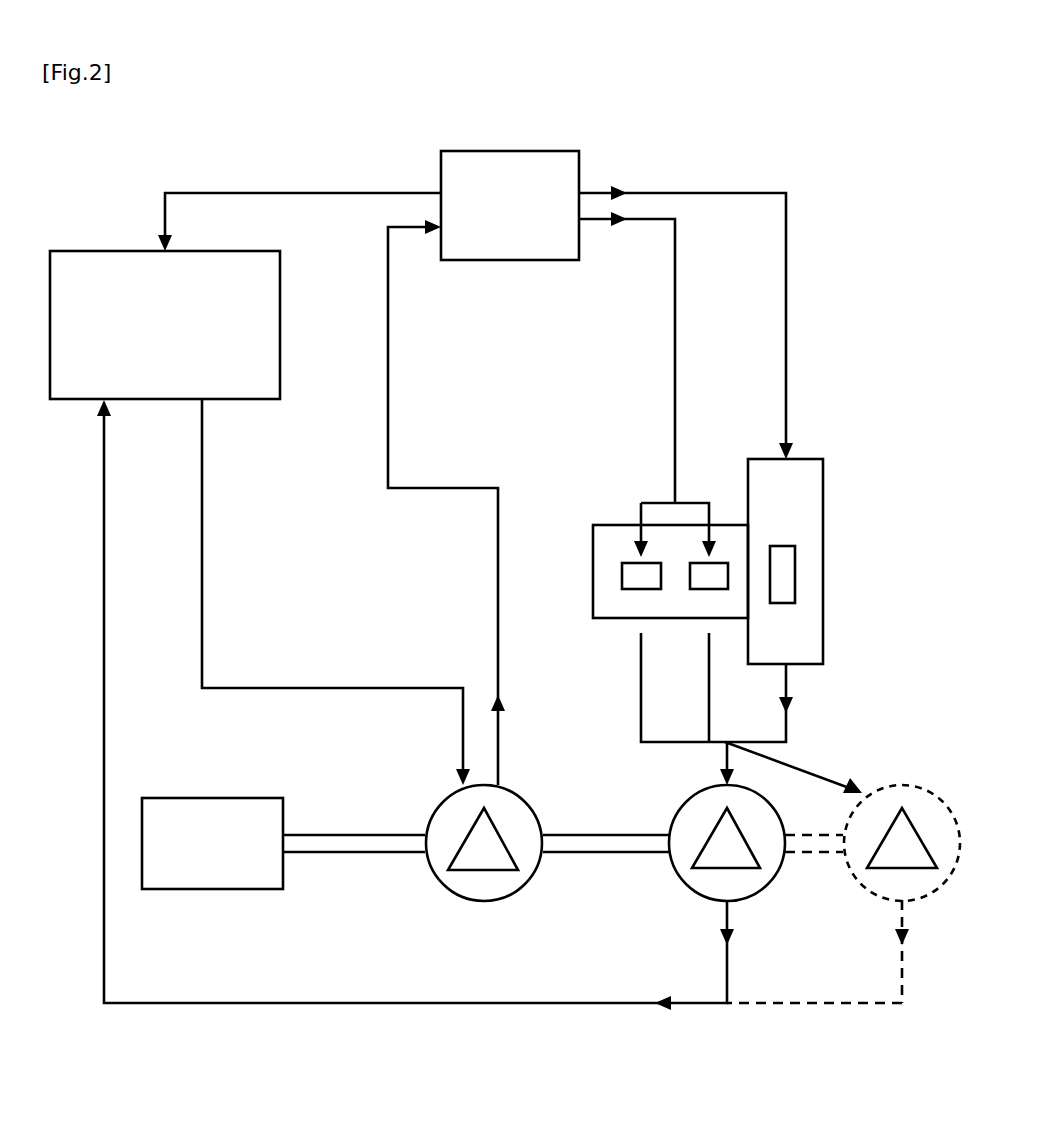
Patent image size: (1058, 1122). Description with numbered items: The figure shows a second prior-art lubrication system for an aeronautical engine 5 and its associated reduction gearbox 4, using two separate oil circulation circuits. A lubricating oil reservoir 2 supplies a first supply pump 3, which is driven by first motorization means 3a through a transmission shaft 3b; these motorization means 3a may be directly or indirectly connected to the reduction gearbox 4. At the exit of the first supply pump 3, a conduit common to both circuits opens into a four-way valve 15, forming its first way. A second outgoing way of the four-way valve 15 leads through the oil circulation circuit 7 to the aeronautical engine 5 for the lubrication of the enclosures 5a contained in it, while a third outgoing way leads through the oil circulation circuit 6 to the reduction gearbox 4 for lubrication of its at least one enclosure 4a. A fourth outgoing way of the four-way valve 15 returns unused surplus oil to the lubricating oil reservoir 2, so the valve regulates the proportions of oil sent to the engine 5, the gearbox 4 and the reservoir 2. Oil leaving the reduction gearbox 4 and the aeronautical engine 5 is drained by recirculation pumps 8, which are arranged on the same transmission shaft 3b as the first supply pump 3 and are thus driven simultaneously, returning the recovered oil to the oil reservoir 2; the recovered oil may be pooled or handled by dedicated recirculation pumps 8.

The lubricating oil reservoir 2 is at (82, 262).
The four-way valve 15 is at (552, 168).
The oil circulation circuit 6 is at (786, 352).
The oil circulation circuit 7 is at (672, 335).
The reduction gearbox 4 is at (808, 492).
The enclosure 4a is at (786, 578).
The aeronautical engine 5 is at (612, 542).
The enclosures 5a is at (632, 582).
The first supply pump 3 is at (490, 877).
The first motorization means 3a is at (230, 880).
The transmission shaft 3b is at (380, 843).
The recirculation pumps 8 is at (735, 890).